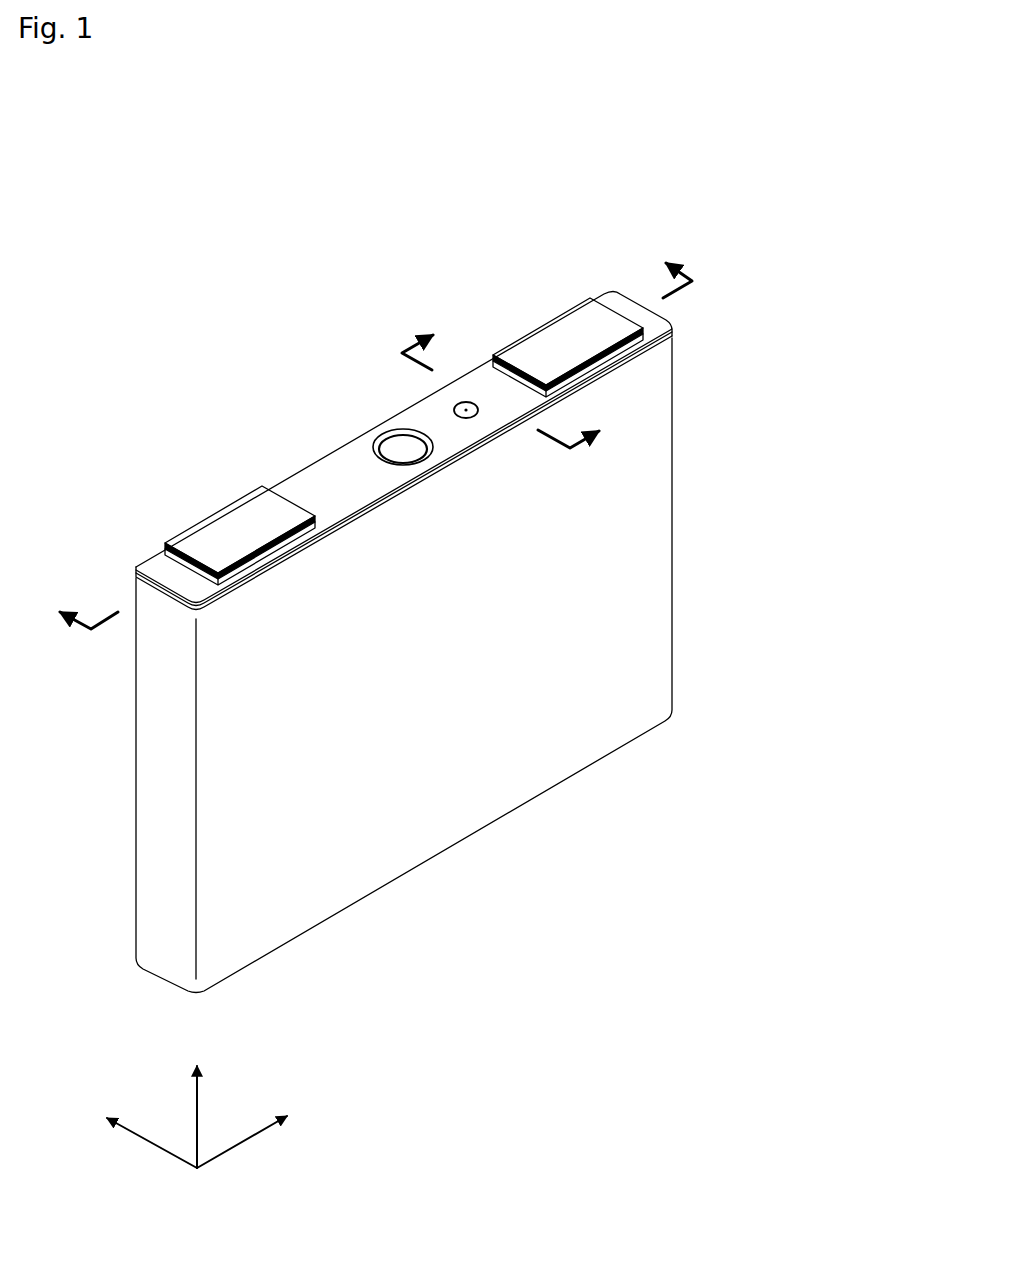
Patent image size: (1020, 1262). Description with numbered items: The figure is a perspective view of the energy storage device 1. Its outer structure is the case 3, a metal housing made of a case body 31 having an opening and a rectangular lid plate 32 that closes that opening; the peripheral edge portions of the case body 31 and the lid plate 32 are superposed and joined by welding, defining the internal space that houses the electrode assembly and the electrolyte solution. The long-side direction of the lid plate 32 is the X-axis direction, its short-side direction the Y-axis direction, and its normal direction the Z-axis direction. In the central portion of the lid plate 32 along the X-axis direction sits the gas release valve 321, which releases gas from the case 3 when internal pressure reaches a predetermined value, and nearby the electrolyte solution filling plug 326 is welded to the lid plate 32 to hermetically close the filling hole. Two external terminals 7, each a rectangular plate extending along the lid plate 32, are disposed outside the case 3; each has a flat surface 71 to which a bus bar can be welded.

The energy storage device 1 is at (674, 193).
The case 3 is at (802, 392).
The case body 31 is at (650, 508).
The lid plate 32 is at (662, 323).
The gas release valve 321 is at (383, 431).
The electrolyte solution filling plug 326 is at (455, 403).
The external terminal 7 is at (222, 533).
The surface 71 is at (255, 513).